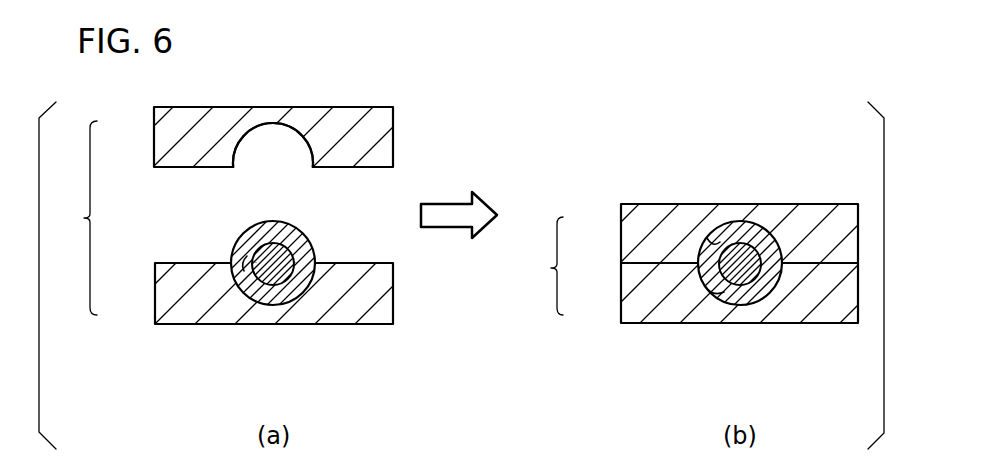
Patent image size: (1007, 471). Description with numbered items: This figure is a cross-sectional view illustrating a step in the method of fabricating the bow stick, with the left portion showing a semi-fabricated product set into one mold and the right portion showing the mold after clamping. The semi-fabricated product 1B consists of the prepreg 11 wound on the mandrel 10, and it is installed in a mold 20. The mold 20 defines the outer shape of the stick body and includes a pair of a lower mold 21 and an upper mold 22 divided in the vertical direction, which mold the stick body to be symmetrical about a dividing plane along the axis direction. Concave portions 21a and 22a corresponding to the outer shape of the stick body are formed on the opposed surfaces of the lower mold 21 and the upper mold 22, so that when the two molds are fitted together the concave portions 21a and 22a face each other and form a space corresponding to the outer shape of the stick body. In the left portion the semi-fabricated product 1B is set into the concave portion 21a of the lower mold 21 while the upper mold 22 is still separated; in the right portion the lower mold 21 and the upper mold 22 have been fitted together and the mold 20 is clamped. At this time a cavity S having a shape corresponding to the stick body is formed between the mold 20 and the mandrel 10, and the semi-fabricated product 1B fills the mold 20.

The mold 20 is at (504, 215).
The lower mold 21 is at (157, 293).
The upper mold 22 is at (158, 137).
The concave portion 21a is at (240, 258).
The concave portion 22a is at (246, 167).
The semi-fabricated product 1B is at (525, 229).
The mandrel 10 is at (276, 249).
The prepreg 11 is at (302, 245).
The cavity S is at (754, 306).